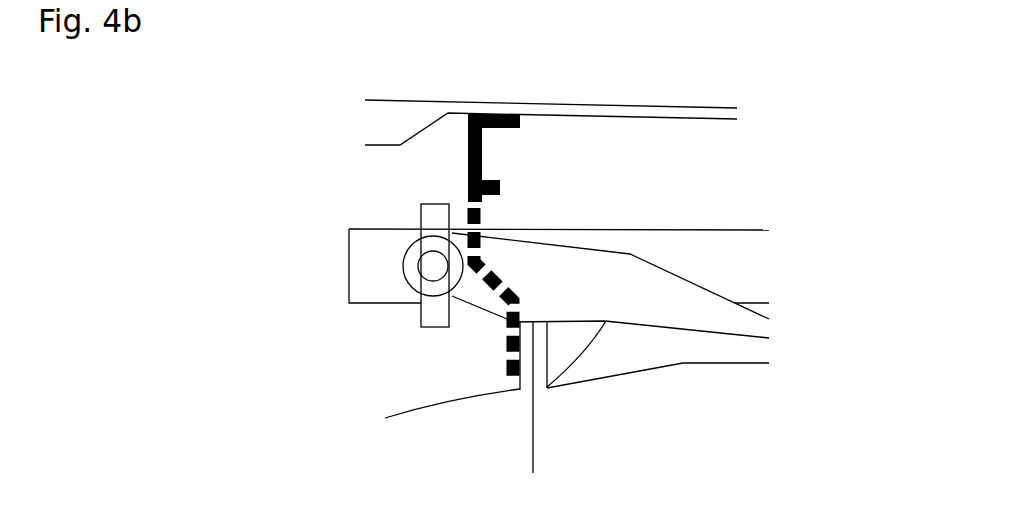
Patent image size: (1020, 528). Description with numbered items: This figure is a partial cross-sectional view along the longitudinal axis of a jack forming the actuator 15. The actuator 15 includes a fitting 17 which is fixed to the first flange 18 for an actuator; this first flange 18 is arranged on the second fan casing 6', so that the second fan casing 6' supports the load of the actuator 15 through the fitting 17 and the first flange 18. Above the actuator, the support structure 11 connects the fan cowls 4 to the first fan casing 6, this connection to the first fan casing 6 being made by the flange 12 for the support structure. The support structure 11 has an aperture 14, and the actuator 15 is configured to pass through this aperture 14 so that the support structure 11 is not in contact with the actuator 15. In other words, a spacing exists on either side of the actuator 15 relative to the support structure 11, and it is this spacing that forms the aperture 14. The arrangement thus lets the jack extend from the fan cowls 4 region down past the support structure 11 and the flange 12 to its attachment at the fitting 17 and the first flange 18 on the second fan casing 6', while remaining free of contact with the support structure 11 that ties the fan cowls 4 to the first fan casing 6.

The fan cowls 4 is at (599, 98).
The first fan casing 6 is at (452, 437).
The second fan casing 6' is at (658, 404).
The support structure 11 is at (489, 106).
The flange for the support structure 12 is at (527, 375).
The aperture 14 is at (490, 212).
The actuator 15 is at (359, 226).
The fitting 17 is at (611, 326).
The first flange for an actuator 18 is at (541, 375).